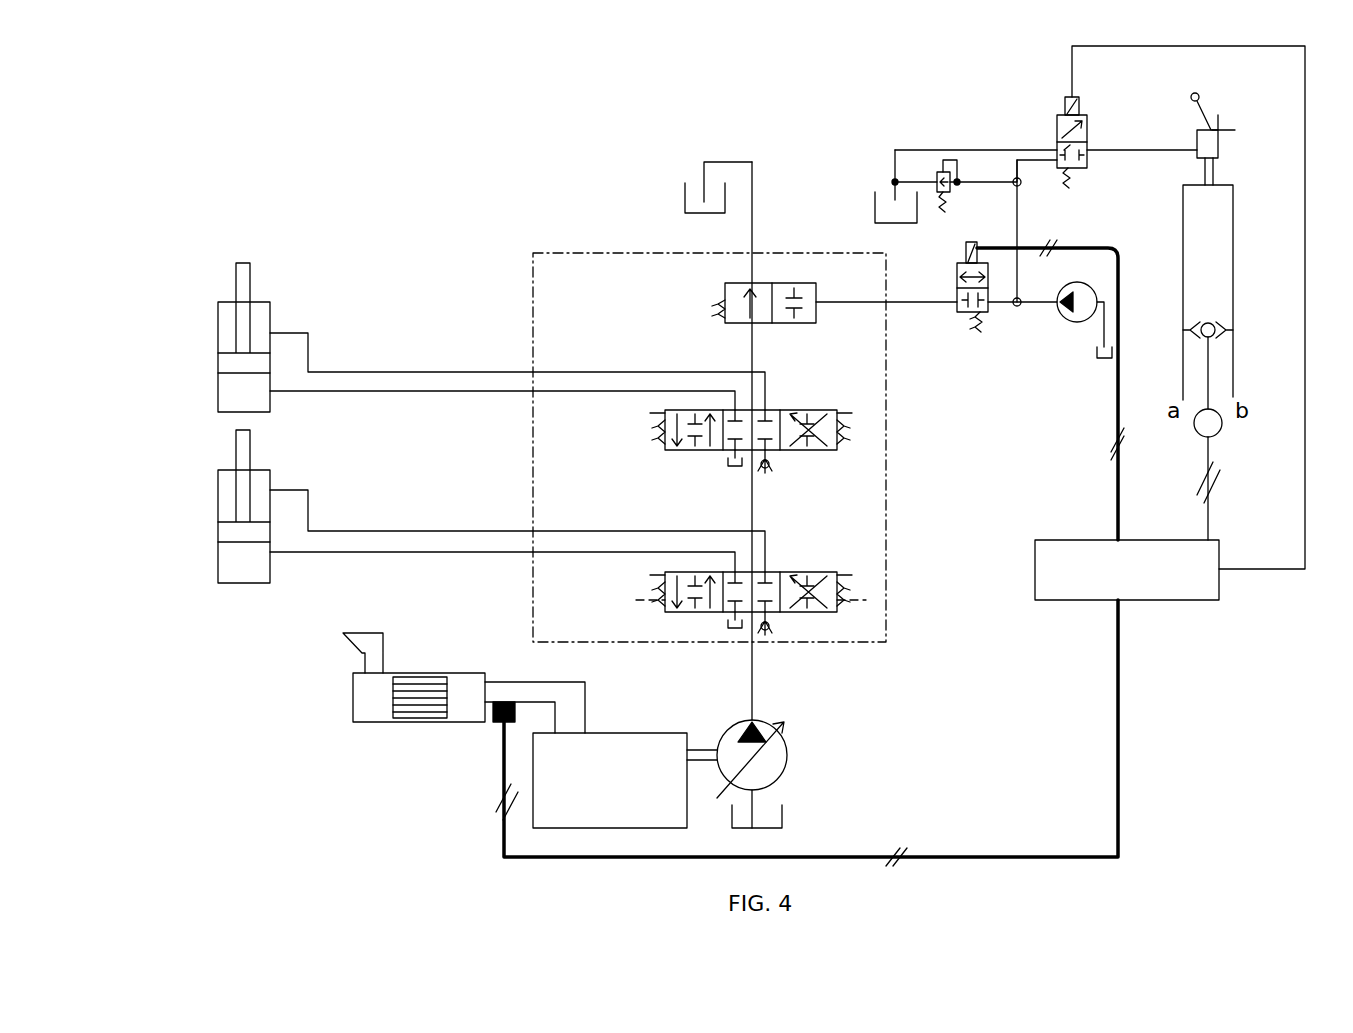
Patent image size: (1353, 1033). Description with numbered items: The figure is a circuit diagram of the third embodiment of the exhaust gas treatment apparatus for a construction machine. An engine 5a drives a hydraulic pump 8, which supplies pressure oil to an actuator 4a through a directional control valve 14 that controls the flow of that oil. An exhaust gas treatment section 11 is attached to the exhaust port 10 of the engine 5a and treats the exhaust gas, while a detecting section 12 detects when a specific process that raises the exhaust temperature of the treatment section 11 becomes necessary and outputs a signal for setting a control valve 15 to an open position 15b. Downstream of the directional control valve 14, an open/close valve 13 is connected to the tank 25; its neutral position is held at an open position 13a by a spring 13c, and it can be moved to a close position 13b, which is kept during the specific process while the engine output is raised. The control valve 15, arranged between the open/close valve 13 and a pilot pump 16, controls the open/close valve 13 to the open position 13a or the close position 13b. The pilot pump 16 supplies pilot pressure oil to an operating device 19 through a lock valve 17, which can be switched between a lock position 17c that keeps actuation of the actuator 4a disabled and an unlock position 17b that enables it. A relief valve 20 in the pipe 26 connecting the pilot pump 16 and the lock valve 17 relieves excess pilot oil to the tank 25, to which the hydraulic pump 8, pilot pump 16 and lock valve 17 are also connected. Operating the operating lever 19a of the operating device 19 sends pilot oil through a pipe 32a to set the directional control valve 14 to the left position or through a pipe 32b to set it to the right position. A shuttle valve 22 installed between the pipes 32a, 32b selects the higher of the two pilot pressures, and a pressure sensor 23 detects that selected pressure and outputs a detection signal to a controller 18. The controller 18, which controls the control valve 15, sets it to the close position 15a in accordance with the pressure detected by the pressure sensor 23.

The actuator 4a is at (218, 325).
The engine 5a is at (617, 765).
The hydraulic pump 8 is at (768, 763).
The exhaust port 10 is at (343, 646).
The exhaust gas treatment section 11 is at (369, 725).
The detecting section 12 is at (492, 725).
The open/close valve 13 is at (764, 282).
The open position 13a is at (735, 300).
The close position 13b is at (806, 290).
The spring 13c is at (710, 310).
The directional control valve 14 is at (781, 409).
The control valve 15 is at (958, 314).
The close position 15a is at (981, 313).
The open position 15b is at (957, 270).
The pilot pump 16 is at (1071, 321).
The lock valve 17 is at (1058, 120).
The unlock position 17b is at (1062, 140).
The lock position 17c is at (1087, 160).
The controller 18 is at (1184, 598).
The operating device 19 is at (1221, 125).
The operating lever 19a is at (1190, 95).
The relief valve 20 is at (938, 174).
The shuttle valve 22 is at (1216, 320).
The pressure sensor 23 is at (1219, 433).
The tank 25 is at (686, 196).
The pipe 26 is at (1019, 222).
The pipe 32a is at (1182, 275).
The pipe 32b is at (1234, 245).